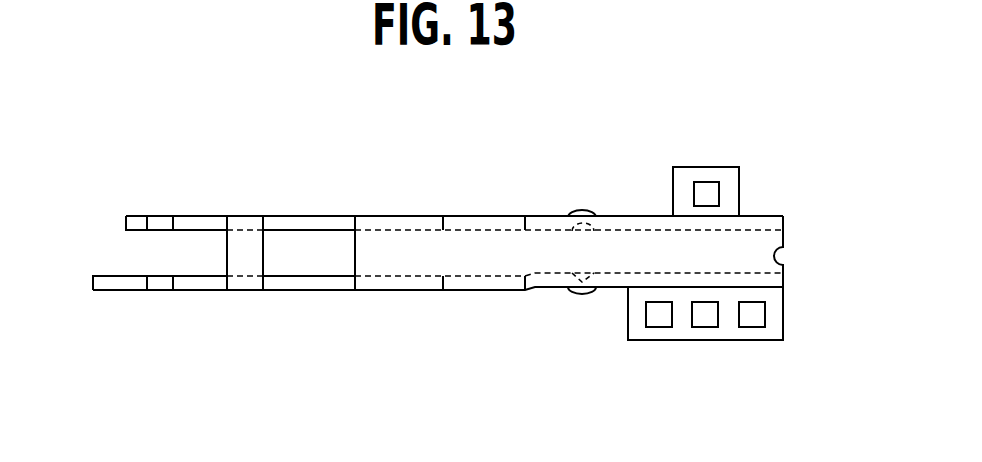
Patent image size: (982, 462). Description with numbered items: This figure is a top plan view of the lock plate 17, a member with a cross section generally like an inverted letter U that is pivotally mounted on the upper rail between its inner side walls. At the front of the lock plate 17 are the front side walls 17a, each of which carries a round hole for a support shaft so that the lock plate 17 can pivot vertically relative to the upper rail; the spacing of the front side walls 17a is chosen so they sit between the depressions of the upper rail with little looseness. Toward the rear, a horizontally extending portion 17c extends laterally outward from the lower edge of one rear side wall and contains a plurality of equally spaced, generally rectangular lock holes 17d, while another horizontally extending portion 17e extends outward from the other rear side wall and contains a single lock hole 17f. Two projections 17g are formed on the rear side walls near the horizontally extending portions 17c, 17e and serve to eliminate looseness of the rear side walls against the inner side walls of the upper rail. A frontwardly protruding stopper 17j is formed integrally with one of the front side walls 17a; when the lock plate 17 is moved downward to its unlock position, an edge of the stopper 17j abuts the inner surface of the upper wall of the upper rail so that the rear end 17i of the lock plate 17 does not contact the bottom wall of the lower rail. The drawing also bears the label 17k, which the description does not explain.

The lock plate 17 is at (482, 216).
The front side walls 17a is at (143, 215).
The horizontally extending portion 17c is at (760, 336).
The lock holes 17d is at (656, 323).
The horizontally extending portion 17e is at (740, 188).
The lock hole 17f is at (706, 188).
The projections 17g is at (583, 212).
The rear end 17i is at (784, 283).
The frontwardly protruding stopper 17j is at (115, 291).
The slit 17k is at (201, 291).